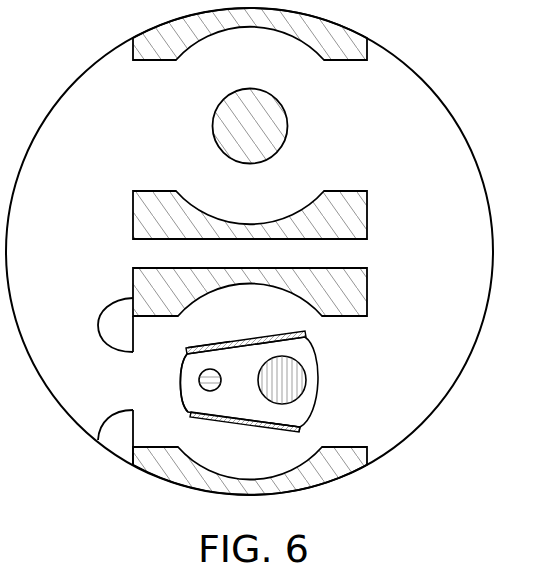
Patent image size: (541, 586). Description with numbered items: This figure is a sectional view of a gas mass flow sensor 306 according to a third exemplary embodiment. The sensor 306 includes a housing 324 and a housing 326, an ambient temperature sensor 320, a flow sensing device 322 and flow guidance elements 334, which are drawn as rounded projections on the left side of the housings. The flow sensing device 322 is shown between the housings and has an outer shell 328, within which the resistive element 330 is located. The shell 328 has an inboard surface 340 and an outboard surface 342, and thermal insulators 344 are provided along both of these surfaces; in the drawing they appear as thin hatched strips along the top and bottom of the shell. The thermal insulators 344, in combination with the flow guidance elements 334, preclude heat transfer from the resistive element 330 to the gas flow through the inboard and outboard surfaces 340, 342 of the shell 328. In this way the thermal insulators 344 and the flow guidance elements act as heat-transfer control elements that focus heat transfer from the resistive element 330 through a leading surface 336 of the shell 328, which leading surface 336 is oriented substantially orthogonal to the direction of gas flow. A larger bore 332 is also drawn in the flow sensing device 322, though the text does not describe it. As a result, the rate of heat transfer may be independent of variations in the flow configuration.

The gas mass flow sensor 306 is at (432, 85).
The ambient temperature sensor 320 is at (285, 110).
The flow sensing device 322 is at (320, 360).
The housing 324 is at (136, 40).
The housing 326 is at (133, 278).
The outer shell 328 is at (318, 350).
The resistive element 330 is at (211, 393).
The pivot bore 332 is at (307, 383).
The flow guidance elements 334 is at (100, 322).
The leading surface 336 is at (180, 382).
The inboard surface 340 is at (229, 341).
The outboard surface 342 is at (300, 428).
The thermal insulators 344 is at (267, 336).